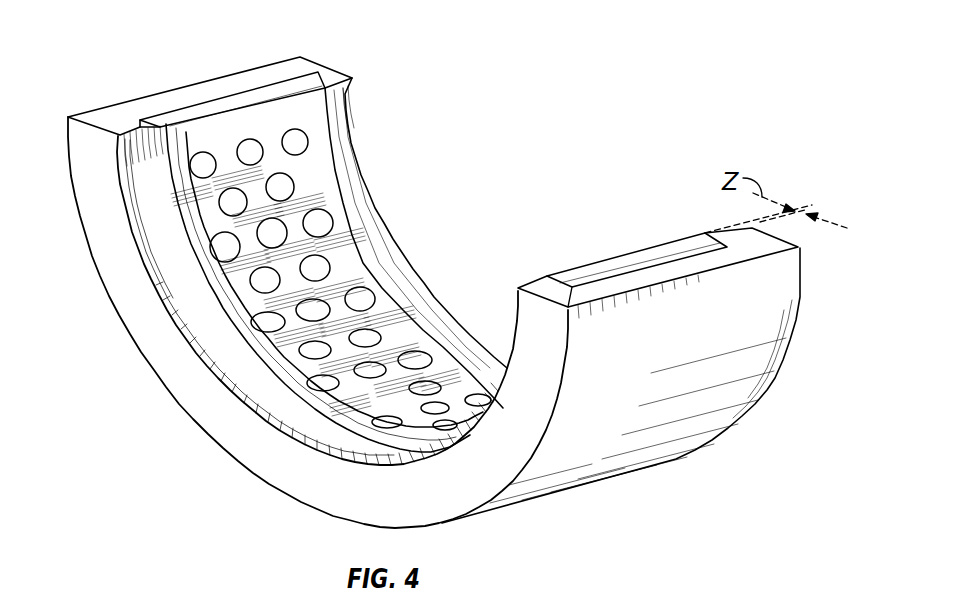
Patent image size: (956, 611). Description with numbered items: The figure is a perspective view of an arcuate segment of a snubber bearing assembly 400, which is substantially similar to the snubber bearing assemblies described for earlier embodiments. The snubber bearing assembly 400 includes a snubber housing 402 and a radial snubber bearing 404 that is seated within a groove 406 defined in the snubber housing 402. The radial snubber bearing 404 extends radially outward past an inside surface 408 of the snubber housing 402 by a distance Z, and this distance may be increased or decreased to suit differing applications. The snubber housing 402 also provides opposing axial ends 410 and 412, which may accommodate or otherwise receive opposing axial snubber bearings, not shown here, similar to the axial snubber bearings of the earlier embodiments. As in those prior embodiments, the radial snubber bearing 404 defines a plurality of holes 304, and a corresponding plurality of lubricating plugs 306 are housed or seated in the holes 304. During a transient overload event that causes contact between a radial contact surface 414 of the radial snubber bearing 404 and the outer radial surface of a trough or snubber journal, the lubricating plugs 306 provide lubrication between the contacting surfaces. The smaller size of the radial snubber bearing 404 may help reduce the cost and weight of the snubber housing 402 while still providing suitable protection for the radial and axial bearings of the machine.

The snubber bearing assembly 400 is at (425, 277).
The snubber housing 402 is at (97, 118).
The radial snubber bearing 404 is at (277, 97).
The groove 406 is at (158, 116).
The inside surface 408 is at (180, 295).
The axial end 410 is at (197, 417).
The axial end 412 is at (430, 303).
The radial contact surface 414 is at (323, 158).
The holes 304 is at (370, 288).
The lubricating plugs 306 is at (293, 135).